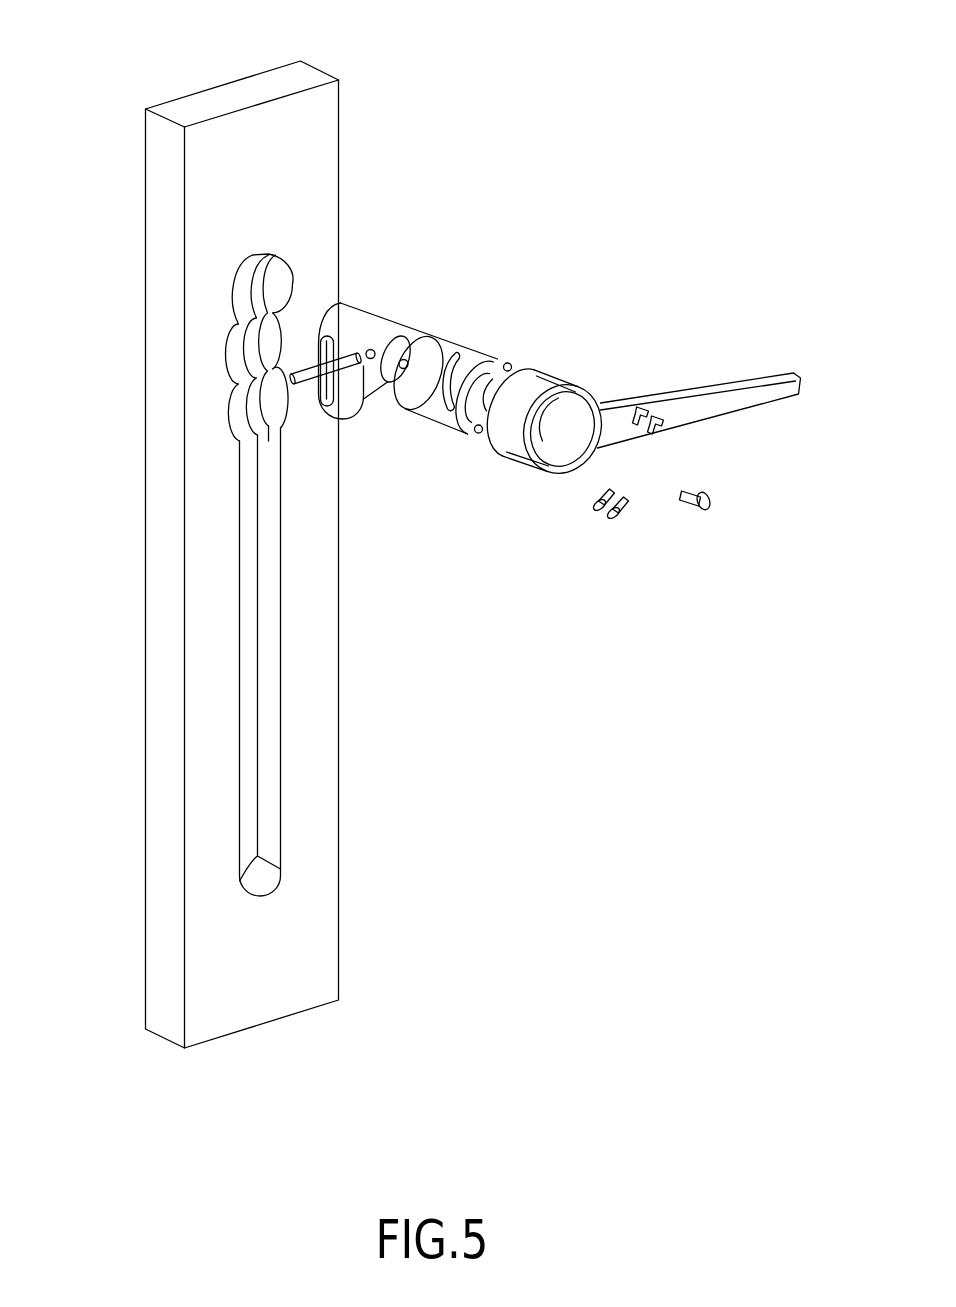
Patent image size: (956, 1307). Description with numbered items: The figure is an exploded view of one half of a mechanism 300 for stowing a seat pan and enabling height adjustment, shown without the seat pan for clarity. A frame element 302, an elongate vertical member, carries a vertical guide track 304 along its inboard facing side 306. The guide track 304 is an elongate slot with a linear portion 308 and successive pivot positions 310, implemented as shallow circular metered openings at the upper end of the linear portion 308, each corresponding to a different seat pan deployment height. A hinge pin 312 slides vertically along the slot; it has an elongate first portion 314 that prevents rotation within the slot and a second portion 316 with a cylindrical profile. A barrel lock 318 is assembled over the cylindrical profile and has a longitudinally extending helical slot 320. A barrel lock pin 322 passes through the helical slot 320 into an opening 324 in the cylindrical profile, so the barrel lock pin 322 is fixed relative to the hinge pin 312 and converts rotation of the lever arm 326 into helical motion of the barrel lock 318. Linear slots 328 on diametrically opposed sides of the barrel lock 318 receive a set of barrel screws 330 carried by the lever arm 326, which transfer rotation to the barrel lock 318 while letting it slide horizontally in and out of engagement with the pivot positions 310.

The mechanism 300 is at (426, 33).
The frame element 302 is at (157, 188).
The vertical guide track 304 is at (238, 522).
The inboard facing side 306 is at (158, 746).
The linear portion 308 is at (258, 624).
The pivot position 310 is at (250, 342).
The hinge pin 312 is at (388, 332).
The first portion 314 is at (343, 403).
The second portion 316 is at (395, 340).
The barrel lock 318 is at (470, 350).
The helical slot 320 is at (442, 398).
The barrel lock pin 322 is at (308, 385).
The opening 324 is at (365, 345).
The lever arm 326 is at (708, 383).
The linear slot 328 is at (508, 362).
The barrel screw 330 is at (667, 427).